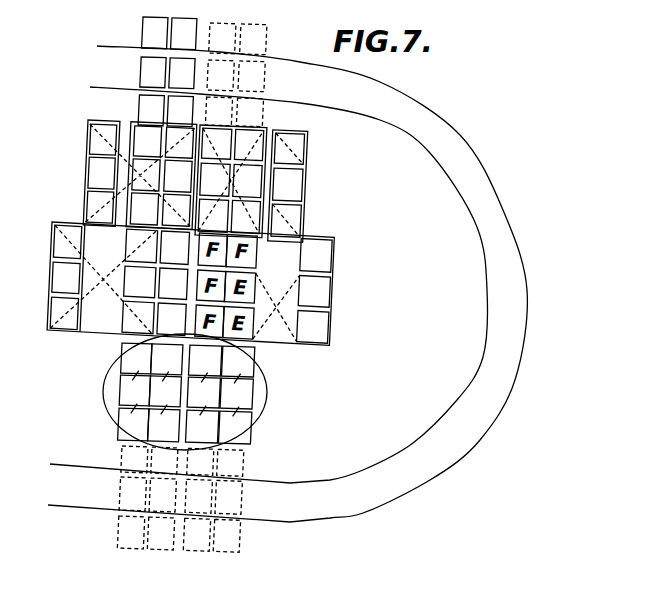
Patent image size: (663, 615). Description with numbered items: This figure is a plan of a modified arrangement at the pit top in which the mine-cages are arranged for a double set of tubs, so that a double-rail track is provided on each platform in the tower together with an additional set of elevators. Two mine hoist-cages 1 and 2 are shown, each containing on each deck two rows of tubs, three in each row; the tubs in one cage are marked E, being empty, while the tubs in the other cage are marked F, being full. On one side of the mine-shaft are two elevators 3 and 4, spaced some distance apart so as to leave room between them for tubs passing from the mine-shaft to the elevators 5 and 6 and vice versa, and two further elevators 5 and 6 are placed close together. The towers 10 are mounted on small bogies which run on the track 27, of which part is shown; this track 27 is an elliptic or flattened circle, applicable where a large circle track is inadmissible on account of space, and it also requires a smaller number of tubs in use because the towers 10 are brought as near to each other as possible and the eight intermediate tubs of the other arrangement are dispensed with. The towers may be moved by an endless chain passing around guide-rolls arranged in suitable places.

The mine hoist-cage 1 is at (108, 388).
The mine hoist-cage 2 is at (258, 397).
The elevator 3 is at (54, 290).
The elevator 4 is at (333, 313).
The elevator 5 is at (90, 158).
The elevator 6 is at (263, 183).
The tower 10 is at (151, 64).
The track 27 is at (488, 300).
The empty tubs E is at (295, 181).